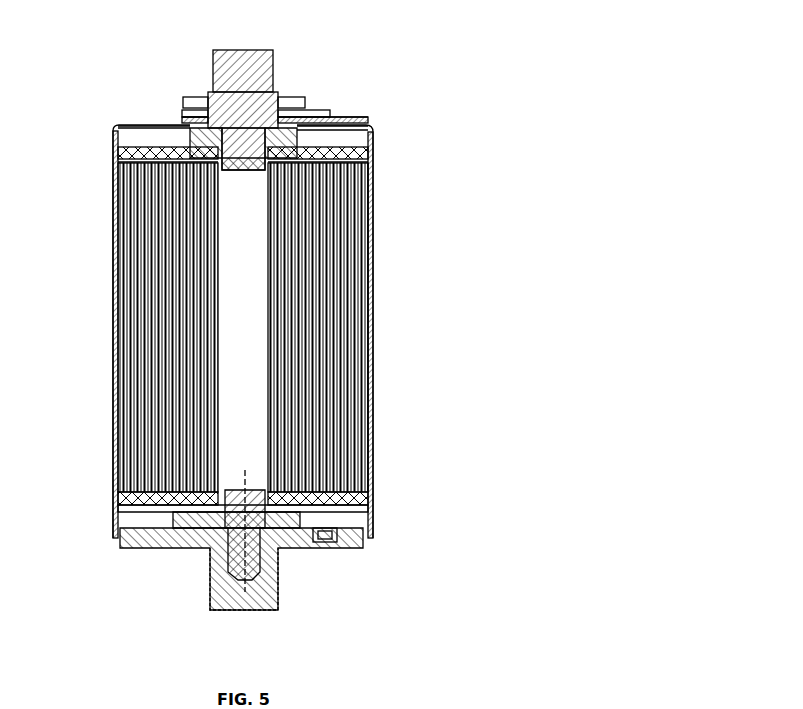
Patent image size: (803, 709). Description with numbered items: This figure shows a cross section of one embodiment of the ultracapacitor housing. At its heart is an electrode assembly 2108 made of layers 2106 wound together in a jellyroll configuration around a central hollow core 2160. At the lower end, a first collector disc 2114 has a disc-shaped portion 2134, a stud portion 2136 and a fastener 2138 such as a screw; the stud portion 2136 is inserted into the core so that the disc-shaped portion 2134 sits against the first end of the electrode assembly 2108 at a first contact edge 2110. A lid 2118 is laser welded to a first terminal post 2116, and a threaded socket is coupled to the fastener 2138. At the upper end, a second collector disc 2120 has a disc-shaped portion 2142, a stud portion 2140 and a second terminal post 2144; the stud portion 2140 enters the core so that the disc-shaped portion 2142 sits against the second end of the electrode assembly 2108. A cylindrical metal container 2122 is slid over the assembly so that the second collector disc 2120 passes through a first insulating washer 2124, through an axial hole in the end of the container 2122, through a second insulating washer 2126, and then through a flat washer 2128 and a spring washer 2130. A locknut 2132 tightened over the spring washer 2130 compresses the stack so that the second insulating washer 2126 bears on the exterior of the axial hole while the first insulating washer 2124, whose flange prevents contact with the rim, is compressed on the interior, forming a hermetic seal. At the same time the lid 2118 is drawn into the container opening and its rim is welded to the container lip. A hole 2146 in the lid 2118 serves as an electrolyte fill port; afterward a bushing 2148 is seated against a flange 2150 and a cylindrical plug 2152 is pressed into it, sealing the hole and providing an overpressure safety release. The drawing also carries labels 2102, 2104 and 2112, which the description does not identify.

The terminal stud 2102 is at (280, 586).
The terminal 2104 is at (282, 93).
The layers 2106 is at (374, 188).
The electrode assembly 2108 is at (355, 220).
The first contact edge 2110 is at (115, 494).
The top insulator 2112 is at (118, 152).
The first collector disc 2114 is at (180, 525).
The first terminal post 2116 is at (210, 575).
The lid 2118 is at (137, 533).
The second collector disc 2120 is at (207, 48).
The metal container 2122 is at (370, 365).
The first insulating washer 2124 is at (310, 128).
The second insulating washer 2126 is at (330, 122).
The flat washer 2128 is at (300, 113).
The spring washer 2130 is at (300, 118).
The locknut 2132 is at (306, 103).
The disc-shaped portion 2134 is at (307, 523).
The stud portion 2136 is at (246, 490).
The fastener 2138 is at (260, 540).
The stud portion 2140 is at (246, 172).
The disc-shaped portion 2142 is at (113, 132).
The second terminal post 2144 is at (274, 64).
The hole 2146 is at (329, 554).
The bushing 2148 is at (340, 533).
The flange 2150 is at (340, 527).
The plug 2152 is at (326, 548).
The hollow core 2160 is at (245, 250).